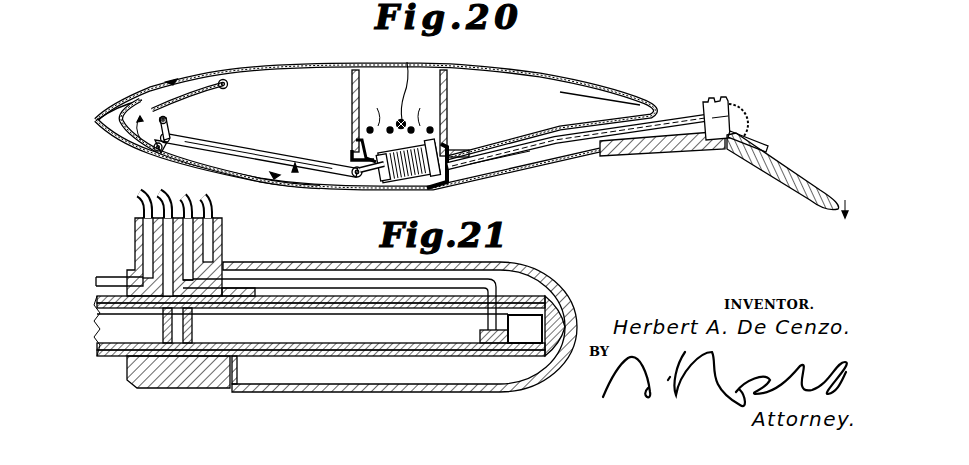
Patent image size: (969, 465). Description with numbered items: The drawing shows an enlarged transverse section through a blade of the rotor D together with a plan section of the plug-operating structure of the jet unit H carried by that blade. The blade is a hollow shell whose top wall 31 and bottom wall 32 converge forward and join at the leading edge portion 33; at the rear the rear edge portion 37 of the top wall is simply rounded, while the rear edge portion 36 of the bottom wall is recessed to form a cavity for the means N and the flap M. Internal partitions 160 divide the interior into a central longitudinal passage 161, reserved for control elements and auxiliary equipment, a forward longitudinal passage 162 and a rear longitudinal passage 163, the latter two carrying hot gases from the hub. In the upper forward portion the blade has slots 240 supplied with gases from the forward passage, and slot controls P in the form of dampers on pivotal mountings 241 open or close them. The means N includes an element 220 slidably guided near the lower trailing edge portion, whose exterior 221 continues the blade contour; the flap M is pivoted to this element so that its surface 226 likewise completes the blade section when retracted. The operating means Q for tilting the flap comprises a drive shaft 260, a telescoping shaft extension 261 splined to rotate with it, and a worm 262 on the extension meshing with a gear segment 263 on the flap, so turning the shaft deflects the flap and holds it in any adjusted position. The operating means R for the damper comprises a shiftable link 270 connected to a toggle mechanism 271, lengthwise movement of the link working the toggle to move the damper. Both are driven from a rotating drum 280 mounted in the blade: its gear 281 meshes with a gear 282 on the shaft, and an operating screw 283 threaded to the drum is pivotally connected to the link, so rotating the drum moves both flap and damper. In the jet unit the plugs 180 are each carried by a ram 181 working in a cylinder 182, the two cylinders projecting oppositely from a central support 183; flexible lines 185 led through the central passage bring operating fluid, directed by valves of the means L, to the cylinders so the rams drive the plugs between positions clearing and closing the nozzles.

In FIG. 20, the top wall 31 is at (309, 66).
In FIG. 20, the bottom wall 32 is at (270, 184).
In FIG. 20, the leading edge portion 33 is at (98, 120).
In FIG. 20, the slots 240 is at (152, 104).
In FIG. 20, the pivotal mountings 241 is at (228, 78).
In FIG. 20, the shiftable link 270 is at (220, 142).
In FIG. 20, the toggle mechanism 271 is at (174, 121).
In FIG. 20, the forward longitudinal passage 162 is at (308, 109).
In FIG. 20, the central longitudinal passage 161 is at (417, 81).
In FIG. 20, the internal partitions 160 is at (455, 102).
In FIG. 20, the rear longitudinal passage 163 is at (583, 102).
In FIG. 20, the rotating drum 280 is at (376, 112).
In FIG. 20, the gear 281 is at (415, 112).
In FIG. 20, the operating screw 283 is at (374, 184).
In FIG. 20, the gear 282 is at (432, 190).
In FIG. 20, the drive shaft 260 is at (538, 145).
In FIG. 20, the shaft extension 261 is at (623, 150).
In FIG. 20, the exterior 221 is at (642, 158).
In FIG. 20, the element 220 is at (718, 150).
In FIG. 20, the worm 262 is at (722, 97).
In FIG. 20, the gear segment 263 is at (742, 118).
In FIG. 20, the surface 226 is at (792, 196).
In FIG. 20, the rear edge portion 36 is at (542, 166).
In FIG. 20, the rear edge portion 37 is at (644, 98).
In FIG. 20, the slot controls P is at (201, 78).
In FIG. 20, the forward wall J is at (358, 72).
In FIG. 20, the means L is at (445, 72).
In FIG. 21, the means L is at (153, 192).
In FIG. 20, the rotor D is at (556, 70).
In FIG. 20, the operating means R is at (292, 186).
In FIG. 20, the operating means Q is at (522, 183).
In FIG. 20, the means N is at (672, 158).
In FIG. 20, the flap M is at (762, 168).
In FIG. 21, the plug 180 is at (521, 270).
In FIG. 21, the ram 181 is at (378, 372).
In FIG. 21, the cylinder 182 is at (304, 360).
In FIG. 21, the central support 183 is at (178, 390).
In FIG. 21, the flexible lines 185 is at (215, 207).
In FIG. 21, the unit H is at (416, 372).